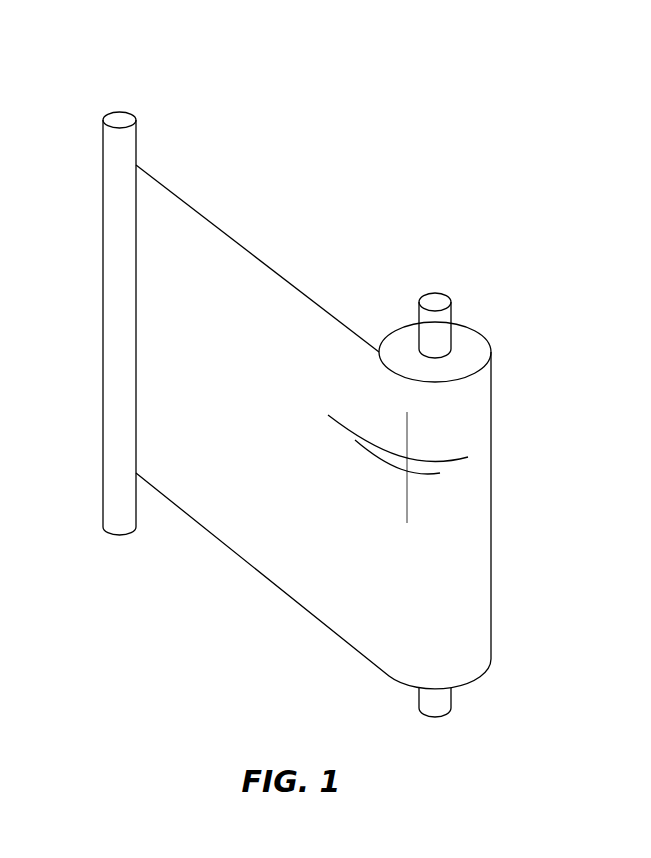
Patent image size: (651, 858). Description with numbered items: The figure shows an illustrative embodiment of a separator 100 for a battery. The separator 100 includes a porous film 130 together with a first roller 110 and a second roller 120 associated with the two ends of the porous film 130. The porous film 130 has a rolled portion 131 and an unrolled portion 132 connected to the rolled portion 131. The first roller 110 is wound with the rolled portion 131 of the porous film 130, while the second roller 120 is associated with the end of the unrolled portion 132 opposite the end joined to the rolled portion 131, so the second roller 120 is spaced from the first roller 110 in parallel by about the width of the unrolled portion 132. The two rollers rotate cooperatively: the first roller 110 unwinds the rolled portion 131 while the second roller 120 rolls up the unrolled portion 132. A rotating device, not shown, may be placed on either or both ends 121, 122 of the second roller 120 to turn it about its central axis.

The separator 100 is at (266, 92).
The first roller 110 is at (435, 327).
The second roller 120 is at (117, 237).
The end of second roller 121 is at (117, 118).
The end of second roller 122 is at (117, 537).
The porous film 130 is at (313, 425).
The rolled portion 131 is at (467, 353).
The unrolled portion 132 is at (265, 575).